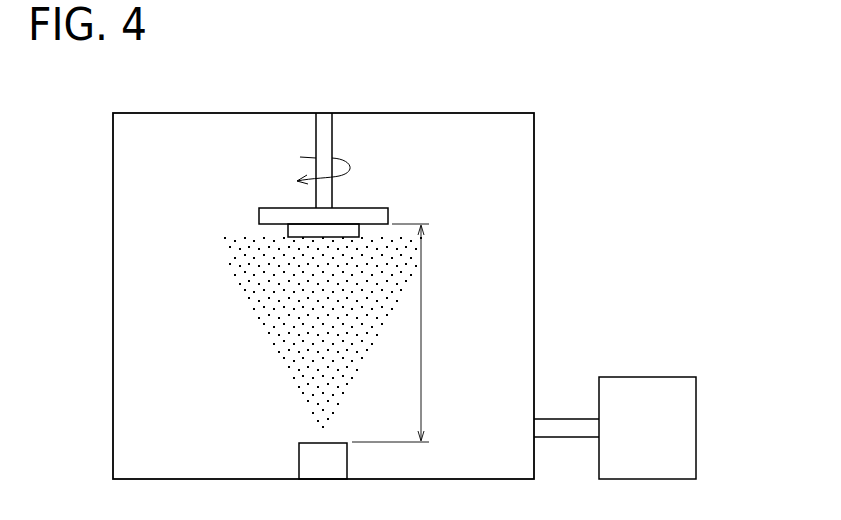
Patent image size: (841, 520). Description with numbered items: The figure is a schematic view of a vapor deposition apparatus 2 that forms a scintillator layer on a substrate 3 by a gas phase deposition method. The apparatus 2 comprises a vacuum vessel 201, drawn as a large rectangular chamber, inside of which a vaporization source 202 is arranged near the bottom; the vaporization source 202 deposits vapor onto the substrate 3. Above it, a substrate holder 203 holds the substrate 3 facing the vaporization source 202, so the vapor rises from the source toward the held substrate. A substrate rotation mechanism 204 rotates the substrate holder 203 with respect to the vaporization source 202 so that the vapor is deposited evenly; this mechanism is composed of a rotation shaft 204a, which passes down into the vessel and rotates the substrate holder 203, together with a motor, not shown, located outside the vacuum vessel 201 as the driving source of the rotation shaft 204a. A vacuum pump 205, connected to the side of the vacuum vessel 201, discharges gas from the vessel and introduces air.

The vapor deposition apparatus 2 is at (414, 95).
The vacuum vessel 201 is at (535, 153).
The vaporization source 202 is at (348, 459).
The substrate holder 203 is at (388, 216).
The substrate rotation mechanism 204 is at (416, 149).
The rotation shaft 204a is at (316, 131).
The vacuum pump 205 is at (697, 427).
The substrate 3 is at (360, 233).